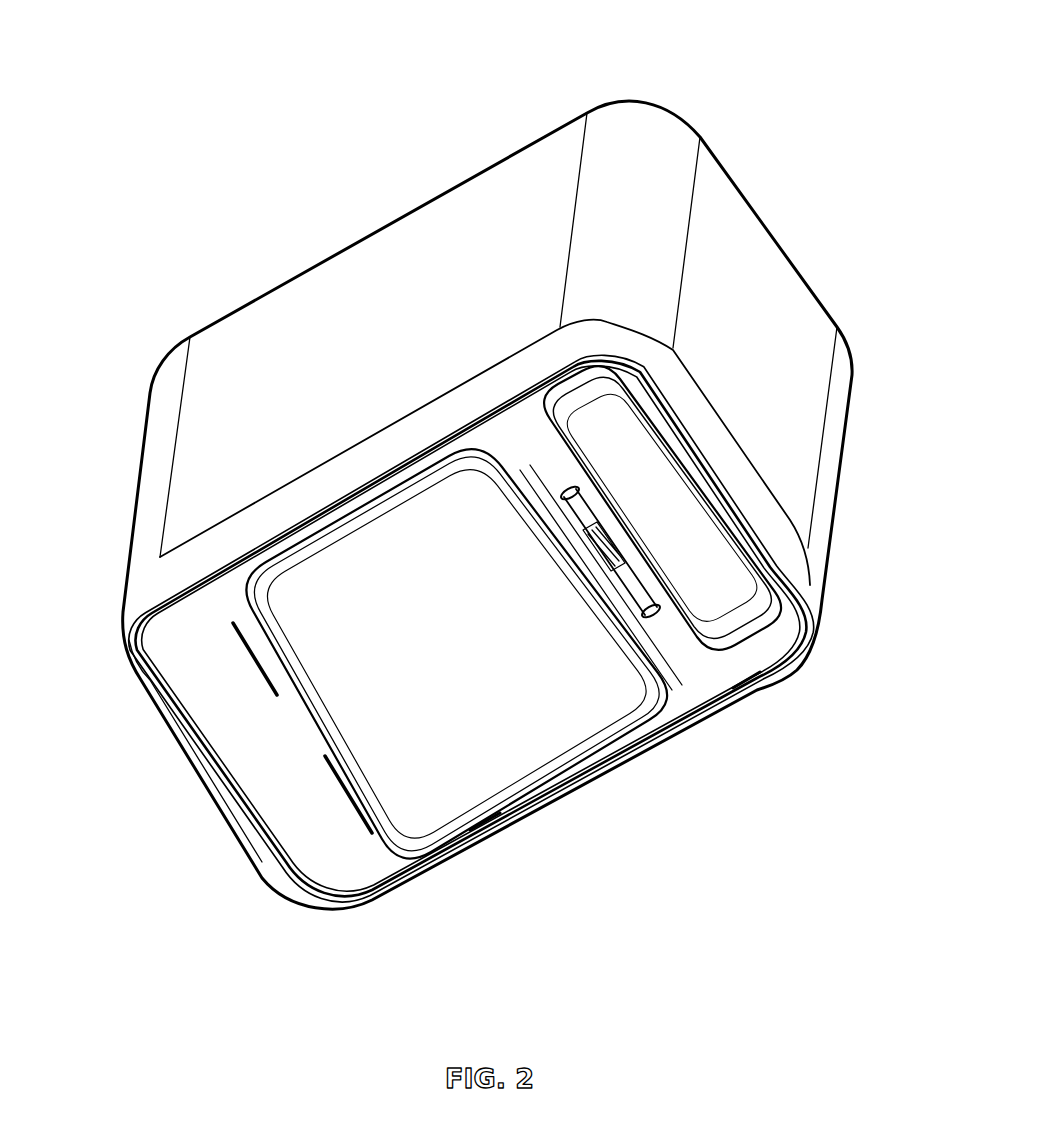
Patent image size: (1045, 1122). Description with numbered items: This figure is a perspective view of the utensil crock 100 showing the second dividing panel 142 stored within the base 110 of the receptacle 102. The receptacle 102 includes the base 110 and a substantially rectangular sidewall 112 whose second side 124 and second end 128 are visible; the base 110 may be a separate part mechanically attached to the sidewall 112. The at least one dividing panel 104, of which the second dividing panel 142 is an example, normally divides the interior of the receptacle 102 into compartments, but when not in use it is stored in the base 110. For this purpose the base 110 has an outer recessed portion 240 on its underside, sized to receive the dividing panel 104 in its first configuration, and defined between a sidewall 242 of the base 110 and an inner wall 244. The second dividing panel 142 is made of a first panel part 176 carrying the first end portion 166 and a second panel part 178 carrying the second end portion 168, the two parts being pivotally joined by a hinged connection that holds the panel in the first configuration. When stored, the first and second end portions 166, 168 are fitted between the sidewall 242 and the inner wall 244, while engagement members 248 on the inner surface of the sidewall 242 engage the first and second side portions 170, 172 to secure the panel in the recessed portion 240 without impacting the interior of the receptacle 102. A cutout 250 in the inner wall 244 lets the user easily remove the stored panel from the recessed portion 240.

The utensil crock 100 is at (140, 54).
The receptacle 102 is at (437, 225).
The dividing panel 104 is at (517, 733).
The second dividing panel 142 is at (473, 594).
The base 110 is at (197, 667).
The sidewall 112 is at (337, 277).
The second side 124 is at (512, 160).
The second end 128 is at (740, 222).
The first end portion 166 is at (193, 598).
The second end portion 168 is at (627, 457).
The first side portion 170 is at (608, 723).
The second side portion 172 is at (320, 577).
The first panel part 176 is at (430, 827).
The second panel part 178 is at (735, 575).
The outer recessed portion 240 is at (523, 410).
The sidewall of the base 242 is at (700, 720).
The inner wall 244 is at (337, 797).
The engagement members 248 is at (482, 838).
The cutout 250 is at (317, 753).